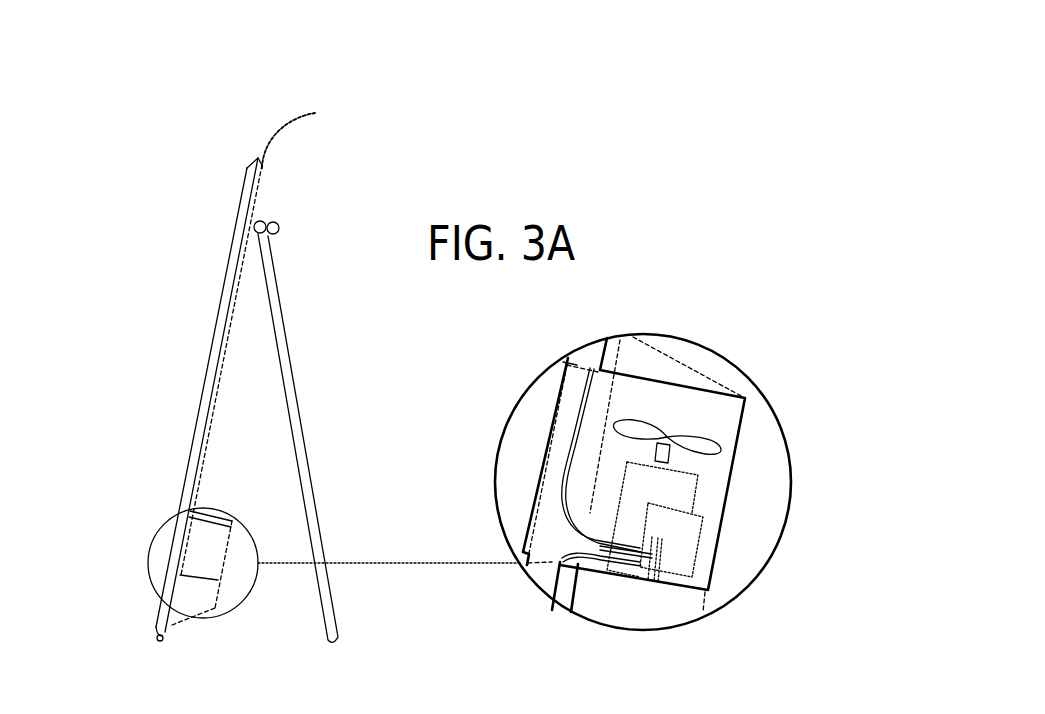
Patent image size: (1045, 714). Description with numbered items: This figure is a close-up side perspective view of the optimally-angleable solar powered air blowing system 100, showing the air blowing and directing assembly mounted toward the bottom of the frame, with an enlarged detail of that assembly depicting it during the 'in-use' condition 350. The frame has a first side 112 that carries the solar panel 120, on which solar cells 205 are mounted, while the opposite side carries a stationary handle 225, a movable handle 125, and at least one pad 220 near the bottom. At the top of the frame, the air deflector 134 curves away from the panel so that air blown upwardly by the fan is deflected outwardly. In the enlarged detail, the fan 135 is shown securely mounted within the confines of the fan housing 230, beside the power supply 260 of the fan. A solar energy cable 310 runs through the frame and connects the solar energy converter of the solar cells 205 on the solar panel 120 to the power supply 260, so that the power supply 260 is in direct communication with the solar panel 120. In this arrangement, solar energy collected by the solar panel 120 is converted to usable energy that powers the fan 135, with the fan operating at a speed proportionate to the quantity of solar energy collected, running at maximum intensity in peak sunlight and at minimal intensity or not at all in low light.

The optimally-angleable solar powered air blowing system 100 is at (650, 92).
The 'in-use' condition 350 is at (698, 135).
The first side 112 is at (225, 233).
The air deflector 134 is at (263, 126).
The movable handle 125 is at (287, 240).
The stationary handle 225 is at (298, 356).
The pad 220 is at (174, 639).
The solar panel 120 is at (165, 518).
The solar cells 205 is at (157, 547).
The fan housing 230 is at (241, 510).
The fan 135 is at (597, 421).
The solar energy cable 310 is at (622, 567).
The power supply 260 is at (676, 568).